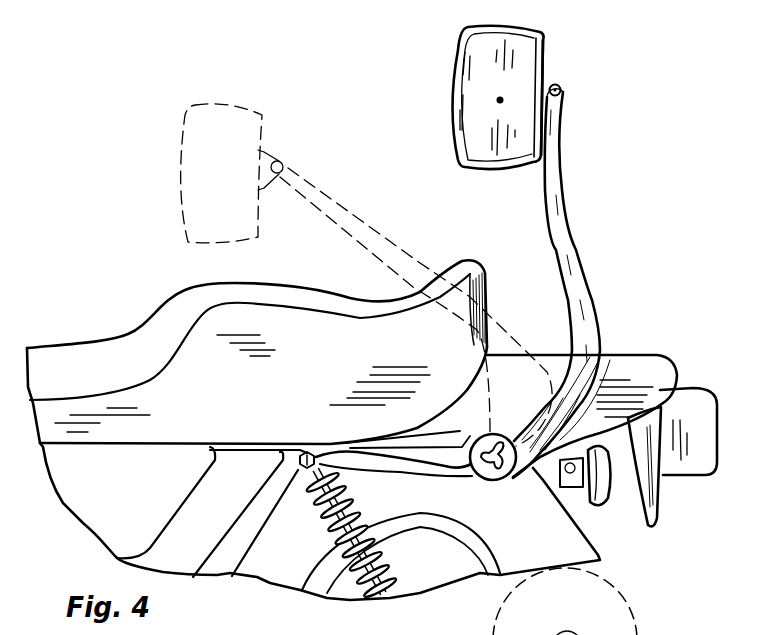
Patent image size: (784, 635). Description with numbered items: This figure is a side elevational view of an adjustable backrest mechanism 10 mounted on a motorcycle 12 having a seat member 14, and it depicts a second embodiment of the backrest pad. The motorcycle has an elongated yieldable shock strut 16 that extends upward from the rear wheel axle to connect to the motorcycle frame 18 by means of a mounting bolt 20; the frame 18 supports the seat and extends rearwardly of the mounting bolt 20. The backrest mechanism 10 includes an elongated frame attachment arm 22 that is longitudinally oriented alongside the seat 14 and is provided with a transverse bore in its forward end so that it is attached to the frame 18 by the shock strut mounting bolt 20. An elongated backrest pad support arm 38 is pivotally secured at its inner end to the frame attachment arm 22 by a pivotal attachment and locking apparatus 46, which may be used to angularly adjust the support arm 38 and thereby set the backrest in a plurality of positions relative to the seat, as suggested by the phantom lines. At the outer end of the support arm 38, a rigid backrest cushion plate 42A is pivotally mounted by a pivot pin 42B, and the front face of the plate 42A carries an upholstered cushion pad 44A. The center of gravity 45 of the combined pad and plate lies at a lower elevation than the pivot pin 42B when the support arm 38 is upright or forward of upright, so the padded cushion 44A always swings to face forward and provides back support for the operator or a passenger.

The adjustable backrest mechanism 10 is at (585, 233).
The motorcycle 12 is at (153, 282).
The seat member 14 is at (122, 333).
The shock strut 16 is at (321, 518).
The motorcycle frame 18 is at (285, 448).
The mounting bolt 20 is at (305, 452).
The frame attachment arm 22 is at (394, 461).
The backrest pad support arm 38 is at (581, 296).
The backrest cushion plate 42A is at (546, 50).
The pivot pin 42B is at (562, 88).
The cushion pad 44A is at (462, 45).
The center of gravity 45 is at (496, 100).
The pivotal attachment and locking apparatus 46 is at (496, 481).